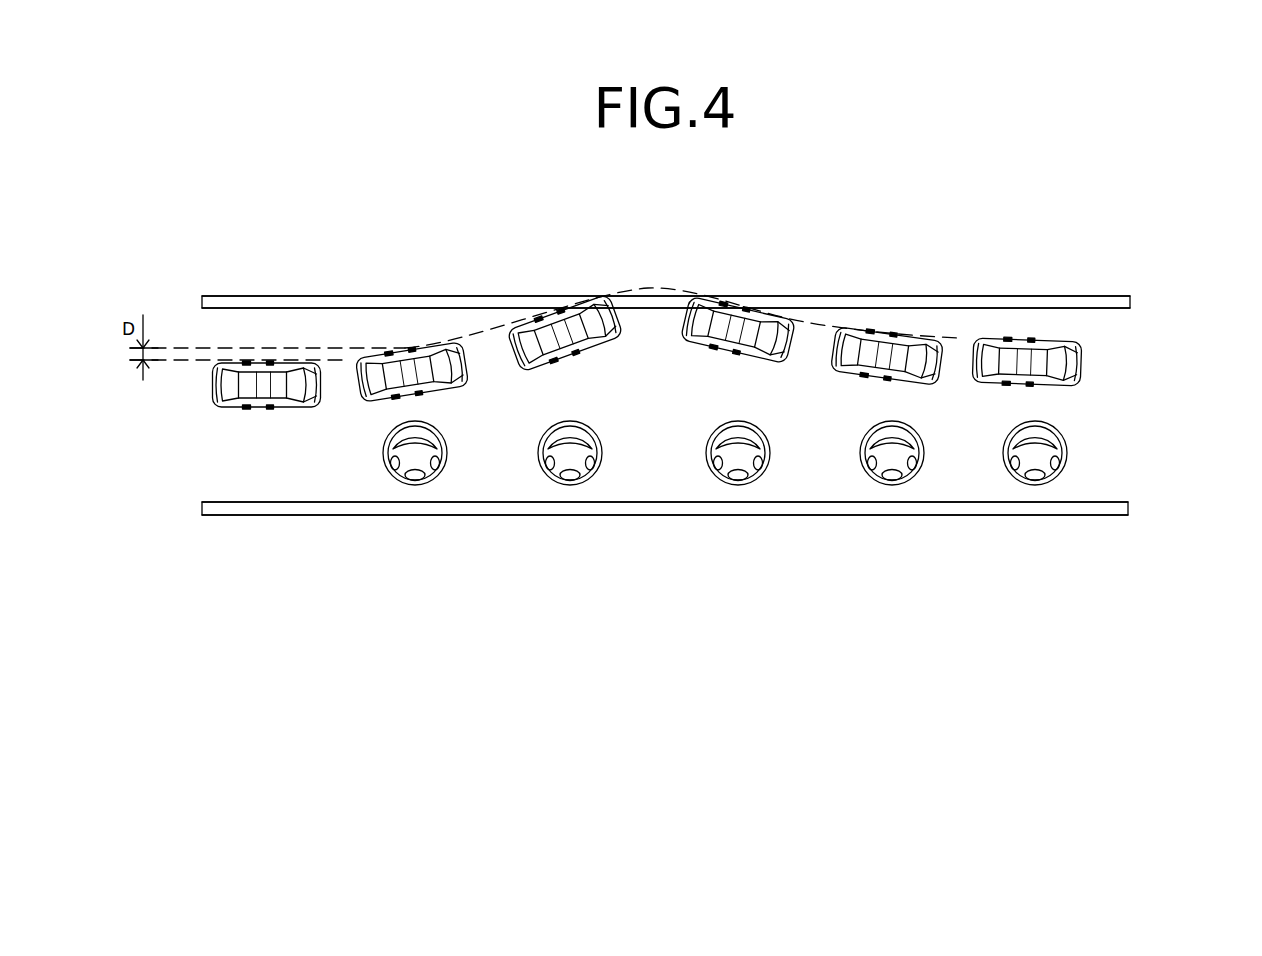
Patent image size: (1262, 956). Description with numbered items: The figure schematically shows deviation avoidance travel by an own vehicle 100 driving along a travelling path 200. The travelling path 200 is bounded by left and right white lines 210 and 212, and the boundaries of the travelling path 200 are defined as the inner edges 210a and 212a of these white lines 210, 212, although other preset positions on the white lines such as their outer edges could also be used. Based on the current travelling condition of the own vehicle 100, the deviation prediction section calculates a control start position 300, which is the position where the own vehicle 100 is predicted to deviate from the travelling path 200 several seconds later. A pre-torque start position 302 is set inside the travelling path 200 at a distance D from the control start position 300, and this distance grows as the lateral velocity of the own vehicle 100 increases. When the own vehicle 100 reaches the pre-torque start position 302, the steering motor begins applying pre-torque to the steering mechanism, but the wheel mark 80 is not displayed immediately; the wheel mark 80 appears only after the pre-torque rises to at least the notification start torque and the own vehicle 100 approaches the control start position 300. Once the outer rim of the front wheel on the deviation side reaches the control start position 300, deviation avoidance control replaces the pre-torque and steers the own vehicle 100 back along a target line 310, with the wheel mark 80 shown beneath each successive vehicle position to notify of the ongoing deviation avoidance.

The wheel mark 80 is at (415, 485).
The own vehicle 100 is at (283, 407).
The travelling path 200 is at (1088, 407).
The left white line 210 is at (833, 297).
The inner edge of left white line 210a is at (916, 310).
The right white line 212 is at (833, 517).
The inner edge of right white line 212a is at (928, 500).
The control start position 300 is at (185, 348).
The pre-torque start position 302 is at (185, 360).
The target line 310 is at (489, 335).